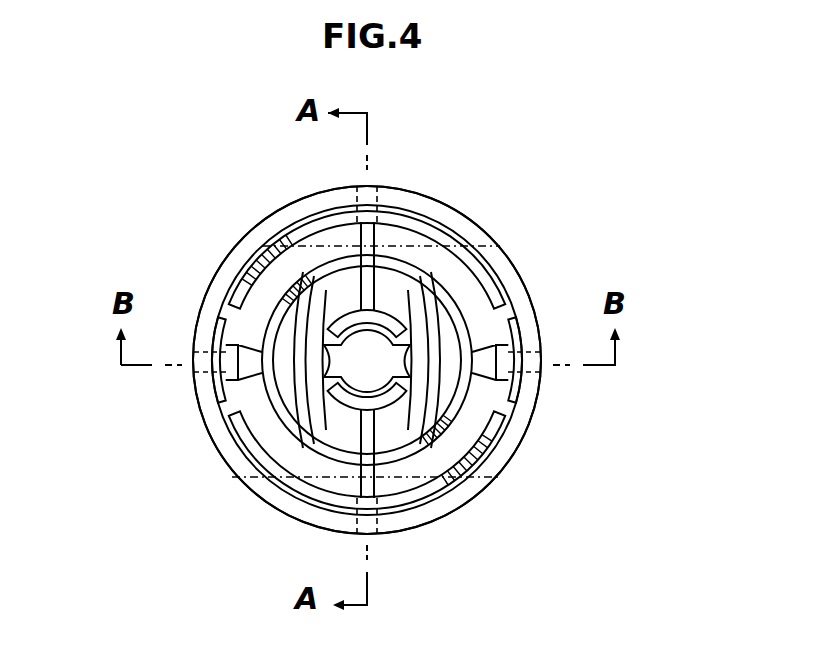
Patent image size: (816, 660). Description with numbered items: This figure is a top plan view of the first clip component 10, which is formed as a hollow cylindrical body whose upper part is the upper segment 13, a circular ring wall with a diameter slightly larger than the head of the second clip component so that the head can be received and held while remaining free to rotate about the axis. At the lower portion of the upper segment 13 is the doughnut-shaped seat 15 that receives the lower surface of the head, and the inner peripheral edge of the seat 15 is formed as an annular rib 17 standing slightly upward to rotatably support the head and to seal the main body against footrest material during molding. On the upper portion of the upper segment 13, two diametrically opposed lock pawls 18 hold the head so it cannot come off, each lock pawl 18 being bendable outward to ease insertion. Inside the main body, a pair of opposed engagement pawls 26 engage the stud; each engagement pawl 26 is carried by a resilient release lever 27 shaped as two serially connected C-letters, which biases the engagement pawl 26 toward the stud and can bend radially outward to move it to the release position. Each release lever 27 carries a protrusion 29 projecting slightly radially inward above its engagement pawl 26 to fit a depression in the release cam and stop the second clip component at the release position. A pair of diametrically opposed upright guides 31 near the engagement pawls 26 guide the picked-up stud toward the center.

The first clip component 10 is at (499, 212).
The upper segment 13 is at (200, 296).
The doughnut-shaped seat 15 is at (262, 286).
The annular rib 17 is at (306, 268).
The lock pawl 18 is at (233, 362).
The engagement pawl 26 is at (297, 452).
The release lever 27 is at (320, 413).
The protrusion 29 is at (333, 362).
The upright guide 31 is at (387, 305).